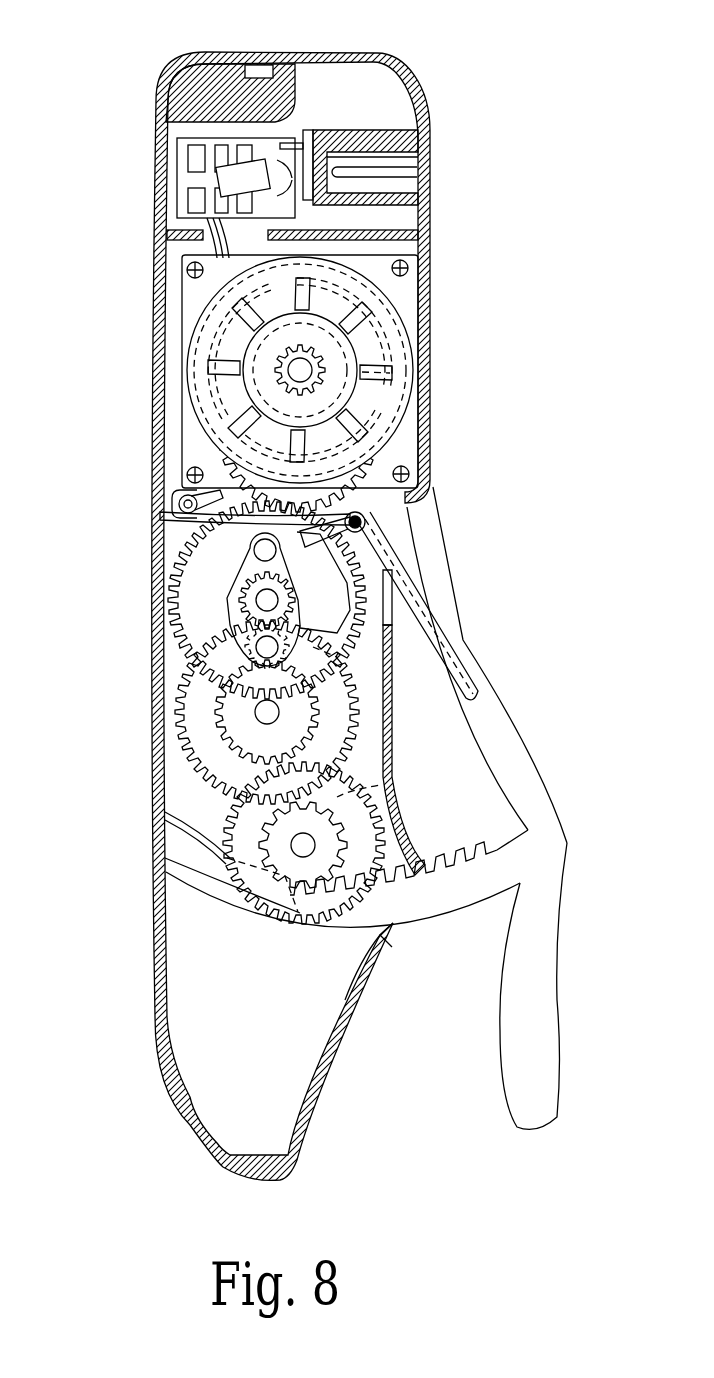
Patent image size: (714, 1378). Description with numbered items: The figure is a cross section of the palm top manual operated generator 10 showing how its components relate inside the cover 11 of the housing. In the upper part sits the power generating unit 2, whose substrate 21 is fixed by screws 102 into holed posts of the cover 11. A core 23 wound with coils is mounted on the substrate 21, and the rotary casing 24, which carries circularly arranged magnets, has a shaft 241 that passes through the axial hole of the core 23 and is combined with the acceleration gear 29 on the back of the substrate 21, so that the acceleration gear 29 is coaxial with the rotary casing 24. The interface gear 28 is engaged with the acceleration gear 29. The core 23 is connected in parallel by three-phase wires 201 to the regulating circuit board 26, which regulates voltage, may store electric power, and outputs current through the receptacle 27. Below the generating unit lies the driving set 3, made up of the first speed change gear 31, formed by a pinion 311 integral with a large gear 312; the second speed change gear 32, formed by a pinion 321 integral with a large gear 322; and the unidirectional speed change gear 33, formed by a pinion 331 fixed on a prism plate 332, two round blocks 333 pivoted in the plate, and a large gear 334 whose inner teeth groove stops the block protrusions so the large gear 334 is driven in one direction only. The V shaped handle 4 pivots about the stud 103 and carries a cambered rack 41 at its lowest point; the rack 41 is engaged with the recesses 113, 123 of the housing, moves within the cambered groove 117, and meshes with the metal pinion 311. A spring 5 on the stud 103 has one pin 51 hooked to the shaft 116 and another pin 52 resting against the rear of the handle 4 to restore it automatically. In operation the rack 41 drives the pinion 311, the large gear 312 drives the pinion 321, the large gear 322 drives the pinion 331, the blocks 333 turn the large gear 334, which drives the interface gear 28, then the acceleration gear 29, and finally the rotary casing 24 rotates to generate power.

The generator 10 is at (370, 595).
The cover 11 is at (194, 55).
The regulating circuit board 26 is at (180, 165).
The receptacle 27 is at (389, 125).
The wires 201 is at (168, 238).
The screws 102 is at (186, 270).
The substrate 21 is at (419, 285).
The power generating unit 2 is at (361, 384).
The rotary casing 24 is at (400, 316).
The acceleration gear 29 is at (316, 352).
The core 23 is at (304, 371).
The shaft 241 is at (306, 381).
The interface gear 28 is at (383, 455).
The shaft 116 is at (183, 495).
The pin 51 is at (172, 506).
The spring 5 is at (339, 599).
The stud 103 is at (365, 535).
The pin 52 is at (440, 644).
The round blocks 333 is at (360, 585).
The driving set 3 is at (244, 712).
The prism plate 332 is at (243, 546).
The unidirectional speed change gear 33 is at (232, 600).
The pinion 331 is at (246, 618).
The large gear 334 is at (178, 578).
The second speed change gear 32 is at (175, 716).
The pinion 321 is at (215, 734).
The large gear 322 is at (203, 768).
The first speed change gear 31 is at (219, 826).
The pinion 311 is at (397, 789).
The large gear 312 is at (193, 885).
The cambered groove 117 is at (200, 897).
The recess 113 is at (388, 925).
The recess 123 is at (362, 967).
The handle 4 is at (435, 808).
The cambered rack 41 is at (472, 893).